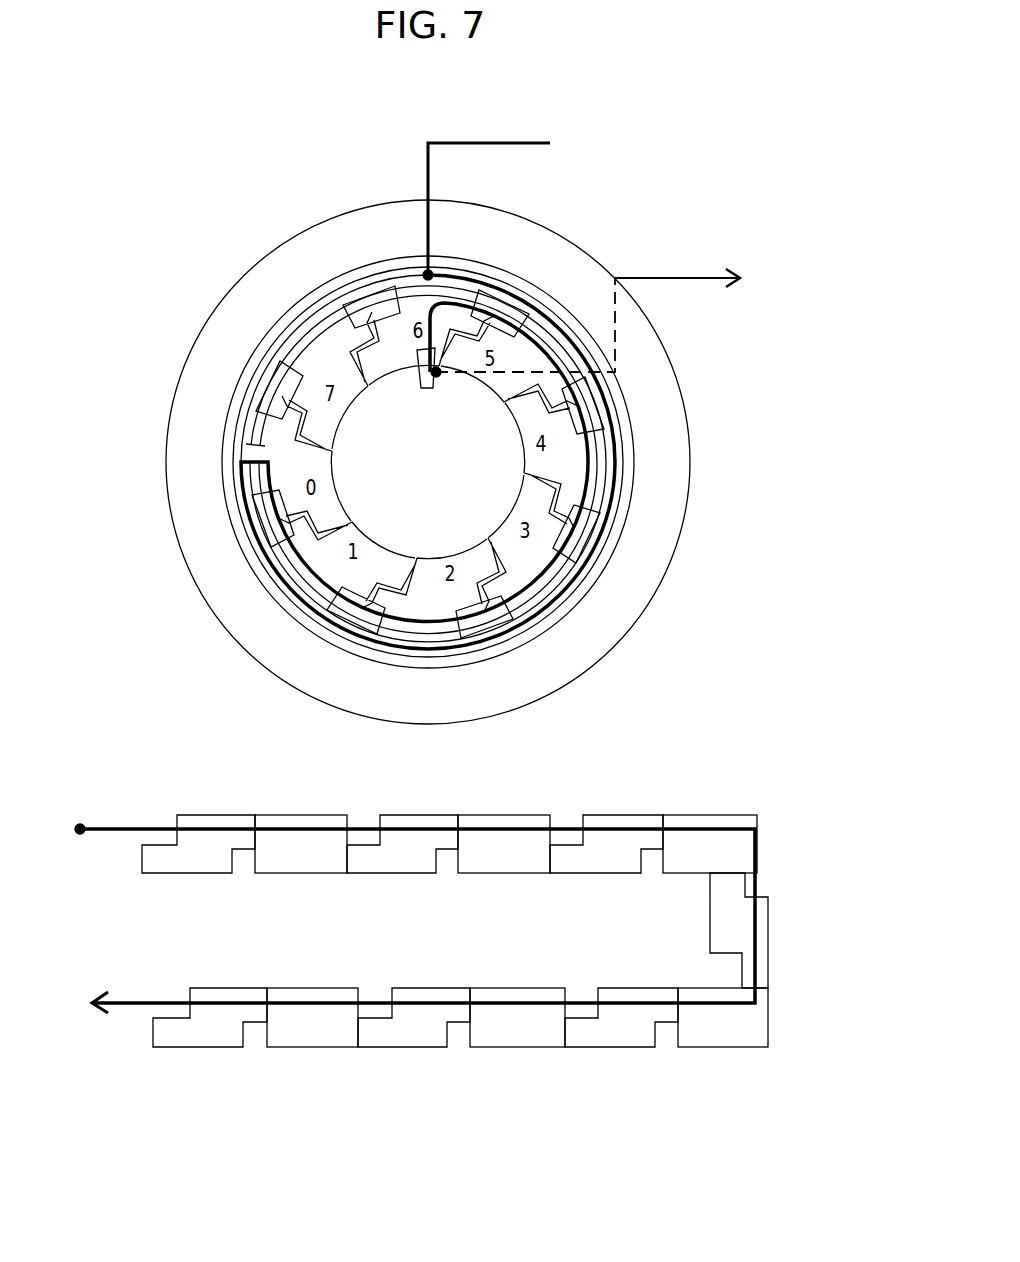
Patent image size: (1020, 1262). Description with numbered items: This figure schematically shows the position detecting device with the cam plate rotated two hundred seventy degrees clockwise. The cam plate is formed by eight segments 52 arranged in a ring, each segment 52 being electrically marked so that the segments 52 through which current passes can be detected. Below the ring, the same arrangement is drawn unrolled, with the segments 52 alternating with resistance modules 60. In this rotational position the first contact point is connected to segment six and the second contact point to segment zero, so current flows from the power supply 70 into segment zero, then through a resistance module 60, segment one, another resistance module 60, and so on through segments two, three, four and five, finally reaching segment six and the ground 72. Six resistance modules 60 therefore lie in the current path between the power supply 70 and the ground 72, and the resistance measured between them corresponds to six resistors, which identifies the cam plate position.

The segment 52 is at (472, 967).
The resistance module 60 is at (511, 967).
The power supply 70 is at (522, 142).
The ground 72 is at (684, 276).